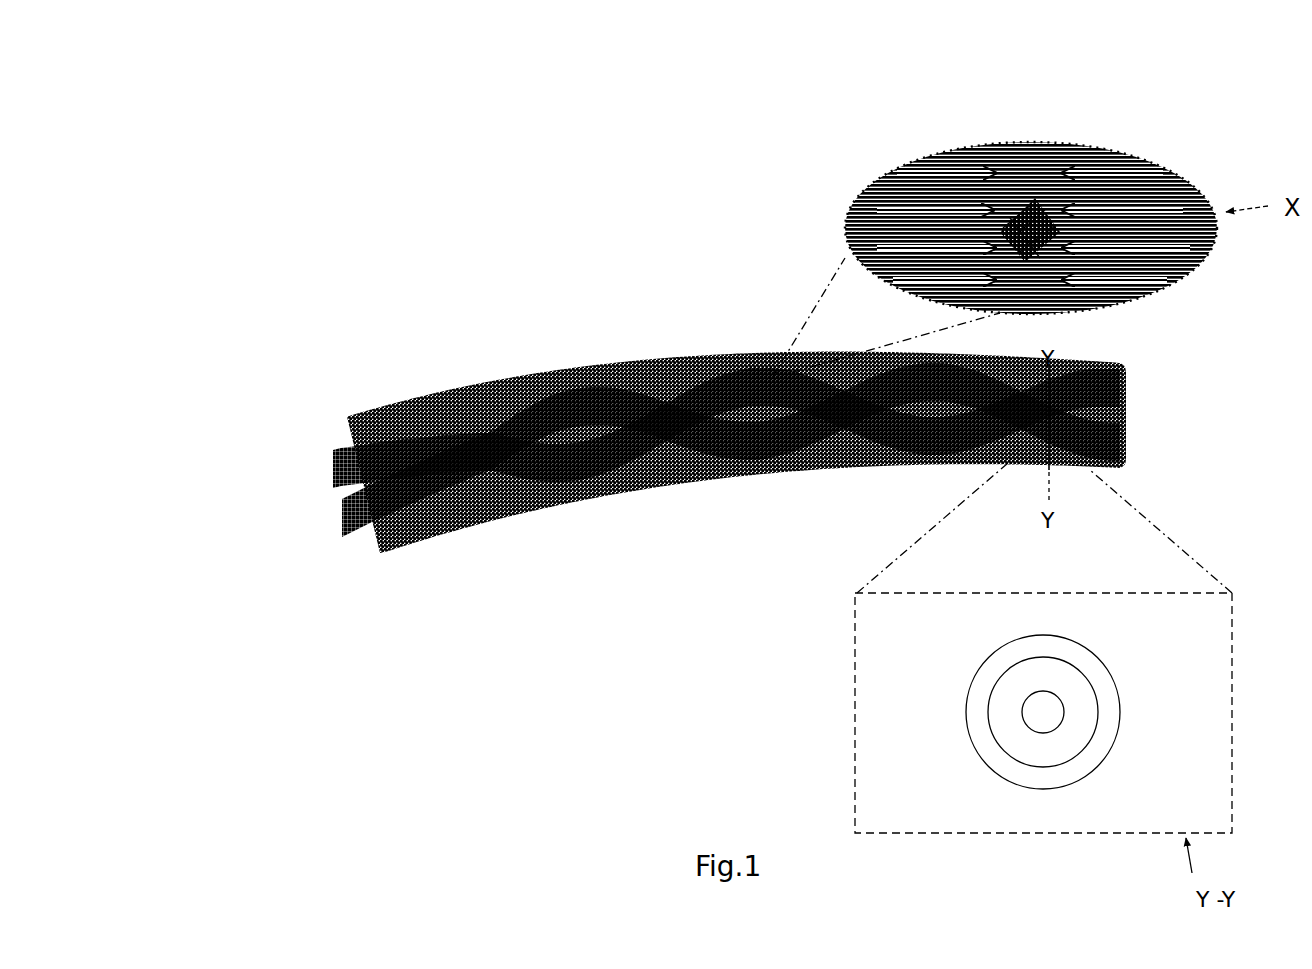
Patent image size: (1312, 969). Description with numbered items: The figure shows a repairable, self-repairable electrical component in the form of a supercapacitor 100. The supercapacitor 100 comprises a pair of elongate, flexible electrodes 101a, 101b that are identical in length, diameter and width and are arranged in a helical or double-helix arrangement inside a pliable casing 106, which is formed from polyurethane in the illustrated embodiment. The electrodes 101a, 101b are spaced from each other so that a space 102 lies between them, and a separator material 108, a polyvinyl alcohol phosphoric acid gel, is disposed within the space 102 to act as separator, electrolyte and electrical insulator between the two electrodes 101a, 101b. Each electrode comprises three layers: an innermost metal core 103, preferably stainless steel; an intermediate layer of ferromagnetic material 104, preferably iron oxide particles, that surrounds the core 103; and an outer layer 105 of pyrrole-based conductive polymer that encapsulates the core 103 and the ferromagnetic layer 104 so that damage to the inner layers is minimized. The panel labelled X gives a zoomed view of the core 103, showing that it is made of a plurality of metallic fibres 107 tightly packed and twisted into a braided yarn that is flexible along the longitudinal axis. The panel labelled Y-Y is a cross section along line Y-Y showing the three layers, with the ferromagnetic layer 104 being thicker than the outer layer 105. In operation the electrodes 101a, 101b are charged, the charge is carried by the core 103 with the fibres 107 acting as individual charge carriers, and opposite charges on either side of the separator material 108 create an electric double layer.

The supercapacitor 100 is at (375, 153).
The electrode 101a is at (582, 470).
The electrode 101b is at (570, 408).
The space 102 is at (755, 418).
The core 103 is at (333, 468).
The layer of ferromagnetic material 104 is at (342, 447).
The outer layer 105 is at (368, 533).
The casing 106 is at (438, 532).
The fibres 107 is at (1037, 210).
The separator material 108 is at (580, 438).